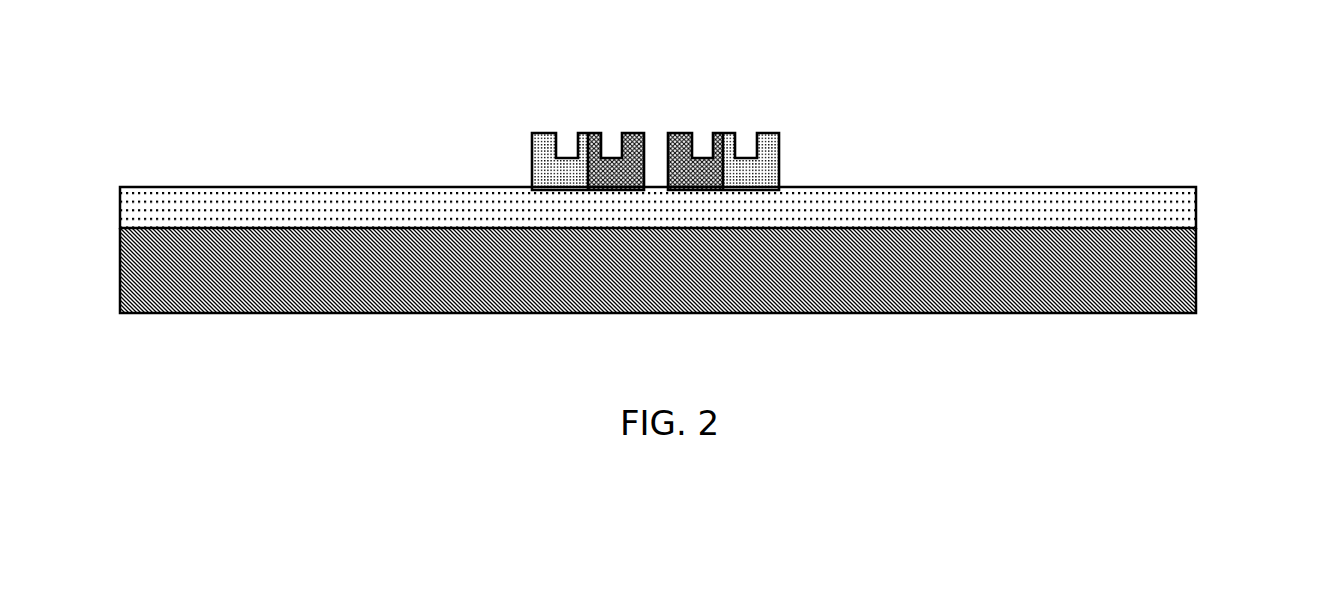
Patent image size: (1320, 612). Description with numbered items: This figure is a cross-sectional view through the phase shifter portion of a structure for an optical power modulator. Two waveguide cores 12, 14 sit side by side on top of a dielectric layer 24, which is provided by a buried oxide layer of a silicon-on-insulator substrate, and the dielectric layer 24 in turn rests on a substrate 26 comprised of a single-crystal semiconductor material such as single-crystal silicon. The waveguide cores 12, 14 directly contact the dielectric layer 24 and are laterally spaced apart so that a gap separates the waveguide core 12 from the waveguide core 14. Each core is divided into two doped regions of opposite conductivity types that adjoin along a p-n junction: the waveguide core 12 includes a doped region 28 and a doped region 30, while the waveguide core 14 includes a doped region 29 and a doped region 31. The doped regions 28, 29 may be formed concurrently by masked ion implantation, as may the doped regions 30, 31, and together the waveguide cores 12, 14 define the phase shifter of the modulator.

The waveguide core 12 is at (505, 125).
The waveguide core 14 is at (791, 121).
The dielectric layer 24 is at (1158, 222).
The substrate 26 is at (1165, 292).
The doped region 28 is at (547, 150).
The doped region 29 is at (767, 150).
The doped region 30 is at (607, 178).
The doped region 31 is at (695, 177).